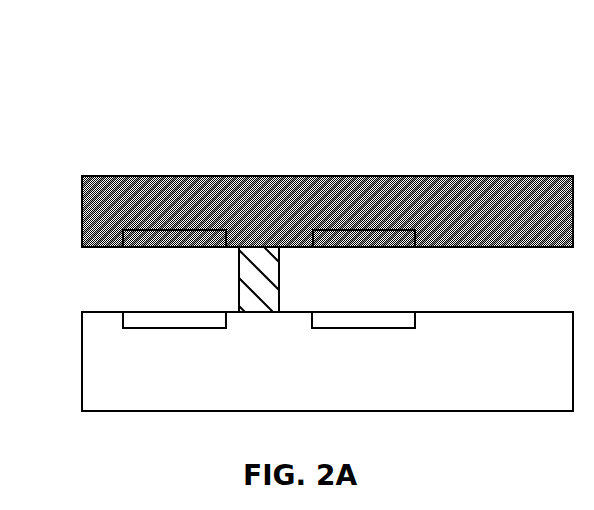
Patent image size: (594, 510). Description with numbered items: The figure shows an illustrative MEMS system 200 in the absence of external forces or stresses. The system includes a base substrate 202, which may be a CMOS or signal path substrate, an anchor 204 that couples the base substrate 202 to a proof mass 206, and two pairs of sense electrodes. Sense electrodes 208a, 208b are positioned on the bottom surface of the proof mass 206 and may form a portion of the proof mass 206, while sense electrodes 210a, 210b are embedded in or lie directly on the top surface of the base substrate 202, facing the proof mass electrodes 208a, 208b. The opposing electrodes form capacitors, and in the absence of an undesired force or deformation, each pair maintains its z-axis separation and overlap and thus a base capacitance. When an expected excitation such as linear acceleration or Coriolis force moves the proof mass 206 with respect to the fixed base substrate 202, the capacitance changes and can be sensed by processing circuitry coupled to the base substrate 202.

The semiconductor package structure 200 is at (150, 54).
The base substrate 202 is at (160, 412).
The anchor 204 is at (238, 278).
The proof mass 206 is at (155, 176).
The sense electrode 208a is at (203, 176).
The sense electrode 208b is at (387, 176).
The sense electrode 210a is at (170, 312).
The sense electrode 210b is at (342, 312).